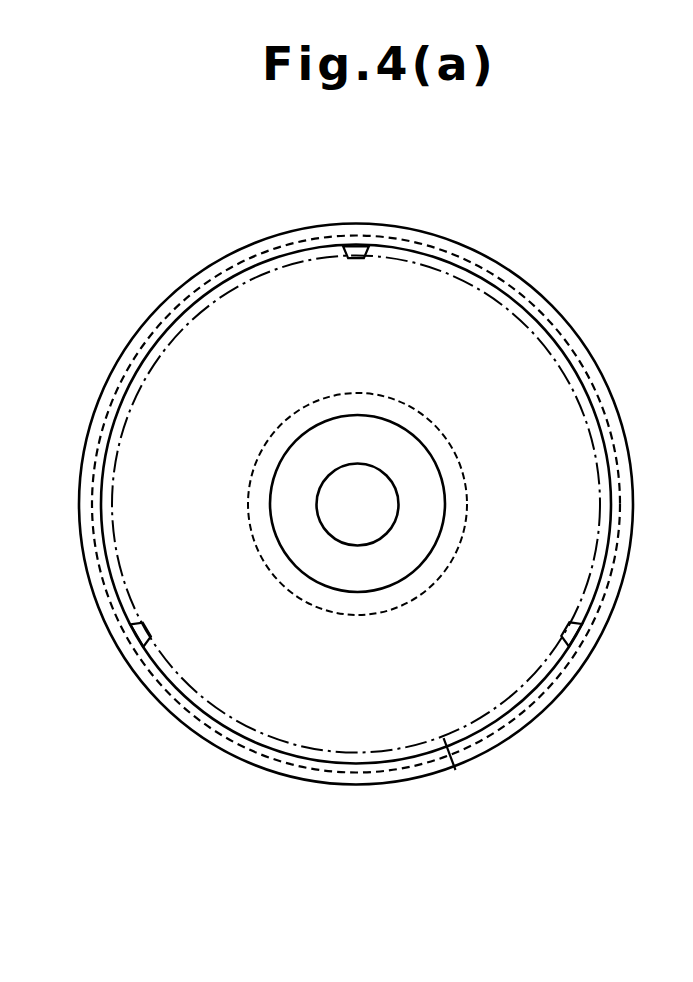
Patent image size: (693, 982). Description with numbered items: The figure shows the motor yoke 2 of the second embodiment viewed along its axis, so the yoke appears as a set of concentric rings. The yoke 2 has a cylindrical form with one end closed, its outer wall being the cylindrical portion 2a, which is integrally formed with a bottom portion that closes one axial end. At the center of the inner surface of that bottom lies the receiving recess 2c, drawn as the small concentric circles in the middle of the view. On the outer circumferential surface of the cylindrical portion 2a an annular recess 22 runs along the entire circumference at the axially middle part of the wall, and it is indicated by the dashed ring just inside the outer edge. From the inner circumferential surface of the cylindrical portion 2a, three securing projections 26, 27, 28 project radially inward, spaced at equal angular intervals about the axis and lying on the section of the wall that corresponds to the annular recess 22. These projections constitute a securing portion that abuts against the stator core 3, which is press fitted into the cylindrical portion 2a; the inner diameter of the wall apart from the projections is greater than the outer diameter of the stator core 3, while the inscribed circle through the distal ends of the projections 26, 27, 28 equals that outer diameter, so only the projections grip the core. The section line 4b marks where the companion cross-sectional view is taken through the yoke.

The motor yoke 2 is at (163, 306).
The cylindrical portion 2a is at (163, 702).
The receiving recess 2c is at (393, 574).
The stator core 3 is at (452, 768).
The section line 4b is at (358, 215).
The annular recess 22 is at (393, 242).
The securing projection 26 is at (357, 258).
The securing projection 27 is at (571, 634).
The securing projection 28 is at (143, 634).